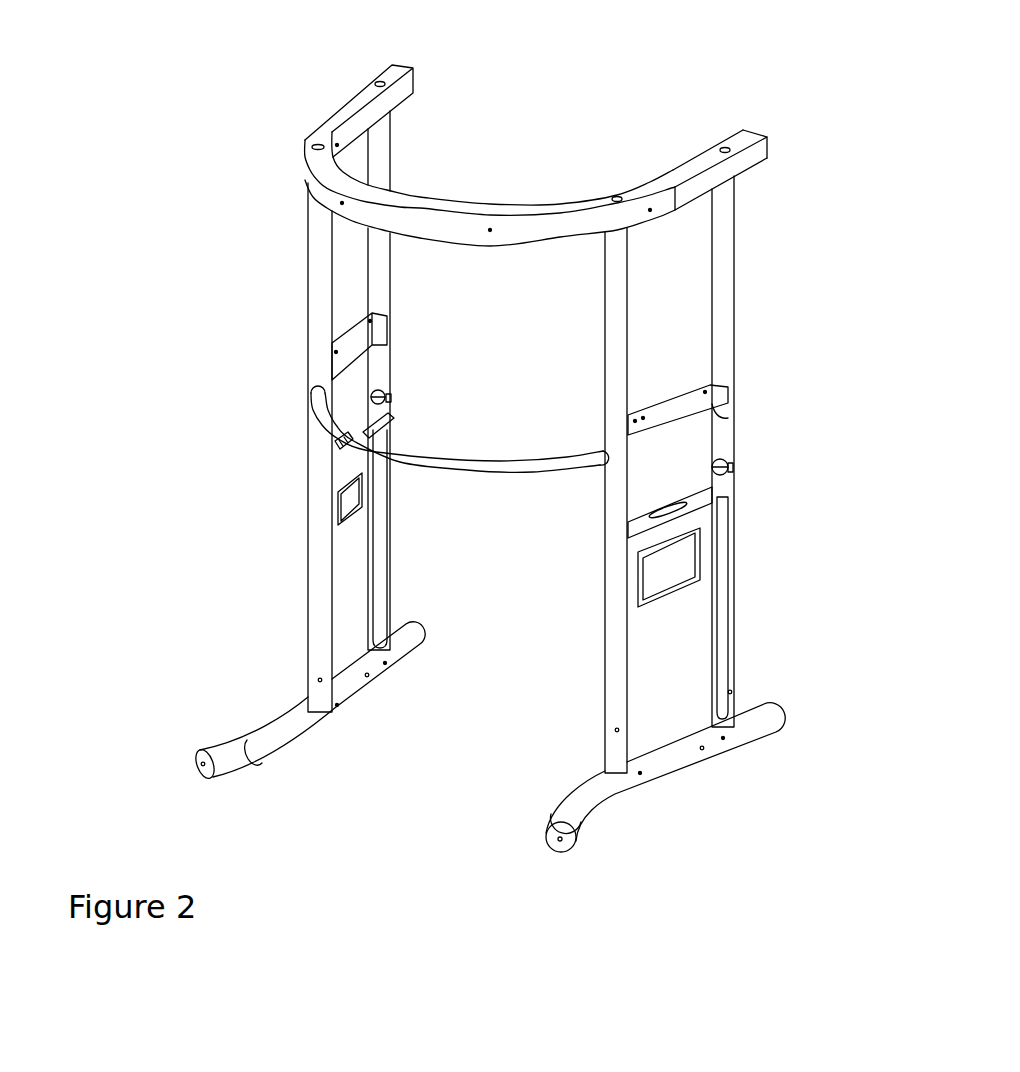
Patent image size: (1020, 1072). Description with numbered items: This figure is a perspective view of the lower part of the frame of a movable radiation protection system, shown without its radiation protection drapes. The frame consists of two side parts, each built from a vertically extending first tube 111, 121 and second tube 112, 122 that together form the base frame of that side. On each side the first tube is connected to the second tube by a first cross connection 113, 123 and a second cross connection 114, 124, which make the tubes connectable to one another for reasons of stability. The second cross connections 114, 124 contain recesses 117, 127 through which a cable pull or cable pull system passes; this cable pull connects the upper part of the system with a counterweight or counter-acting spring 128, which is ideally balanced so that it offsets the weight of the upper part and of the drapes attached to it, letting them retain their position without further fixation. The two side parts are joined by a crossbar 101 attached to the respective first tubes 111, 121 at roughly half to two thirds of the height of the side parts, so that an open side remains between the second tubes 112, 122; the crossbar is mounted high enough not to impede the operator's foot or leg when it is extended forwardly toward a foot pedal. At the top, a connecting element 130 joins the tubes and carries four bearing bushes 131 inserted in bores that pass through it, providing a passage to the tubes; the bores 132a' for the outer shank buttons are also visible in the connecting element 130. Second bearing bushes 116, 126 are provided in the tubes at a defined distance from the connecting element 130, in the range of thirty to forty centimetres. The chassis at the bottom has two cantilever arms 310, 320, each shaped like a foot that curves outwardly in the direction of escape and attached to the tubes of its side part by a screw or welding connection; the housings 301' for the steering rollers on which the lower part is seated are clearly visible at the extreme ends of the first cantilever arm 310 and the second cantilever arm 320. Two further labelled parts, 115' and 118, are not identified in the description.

The crossbar 101 is at (492, 467).
The first tube 111 is at (320, 682).
The second tube 112 is at (407, 633).
The first cross connection 113 is at (378, 332).
The second cross connection 114 is at (378, 425).
The slide rail 115' is at (431, 539).
The second bearing bush 116 is at (385, 396).
The recess 117 is at (340, 443).
The mounting plate 118 is at (343, 505).
The first tube 121 is at (617, 732).
The second tube 122 is at (732, 692).
The first cross connection 123 is at (680, 400).
The second cross connection 124 is at (700, 497).
The second bearing bush 126 is at (733, 467).
The recess 127 is at (729, 498).
The counterweight or counter-acting spring 128 is at (688, 563).
The connecting element 130 is at (475, 213).
The bearing bushes 131 is at (380, 81).
The bores for the outer shank buttons 132a' is at (811, 143).
The housings for the steering rollers 301' is at (389, 824).
The first cantilever arm 310 is at (369, 676).
The second cantilever arm 320 is at (704, 748).